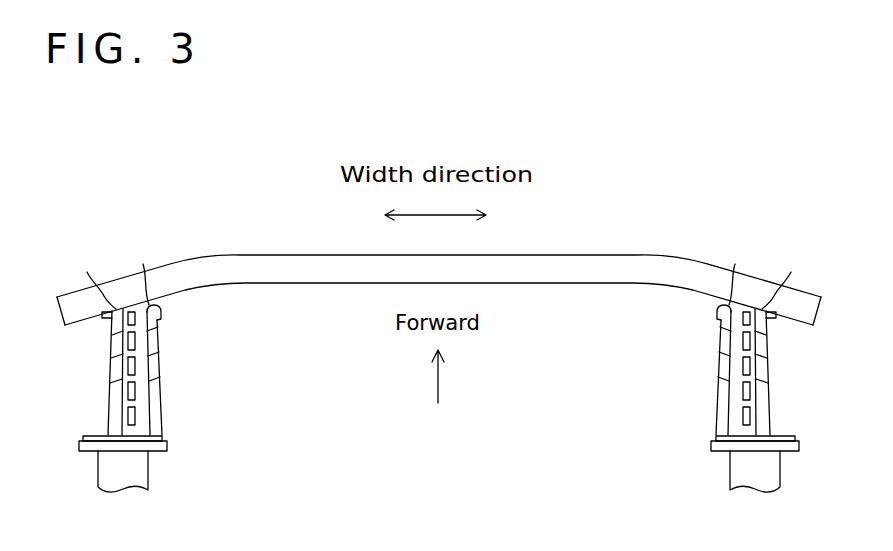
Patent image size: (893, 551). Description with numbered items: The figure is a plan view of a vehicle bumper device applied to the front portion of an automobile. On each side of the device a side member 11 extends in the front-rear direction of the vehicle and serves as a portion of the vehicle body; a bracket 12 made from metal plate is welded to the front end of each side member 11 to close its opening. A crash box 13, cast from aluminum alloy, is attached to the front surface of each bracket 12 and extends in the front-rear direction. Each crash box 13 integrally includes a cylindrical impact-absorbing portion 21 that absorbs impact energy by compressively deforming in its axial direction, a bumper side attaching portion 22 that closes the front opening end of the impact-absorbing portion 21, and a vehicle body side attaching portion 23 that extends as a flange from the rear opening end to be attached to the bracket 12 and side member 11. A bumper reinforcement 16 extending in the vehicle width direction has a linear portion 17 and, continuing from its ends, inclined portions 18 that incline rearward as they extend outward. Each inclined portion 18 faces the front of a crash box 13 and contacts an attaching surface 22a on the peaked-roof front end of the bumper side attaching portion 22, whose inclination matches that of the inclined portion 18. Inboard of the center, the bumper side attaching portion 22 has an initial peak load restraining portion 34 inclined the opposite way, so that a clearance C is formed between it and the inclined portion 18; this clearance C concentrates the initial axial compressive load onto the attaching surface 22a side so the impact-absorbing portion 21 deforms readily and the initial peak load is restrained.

The side member 11 is at (98, 476).
The bracket 12 is at (80, 446).
The crash box 13 is at (110, 367).
The bumper reinforcement 16 is at (600, 255).
The linear portion 17 is at (338, 254).
The inclined portion 18 is at (121, 277).
The impact-absorbing portion 21 is at (153, 368).
The bumper side attaching portion 22 is at (156, 318).
The attaching surface 22a is at (437, 279).
The vehicle body side attaching portion 23 is at (163, 438).
The initial peak load restraining portion 34 is at (437, 270).
The clearance C is at (168, 312).